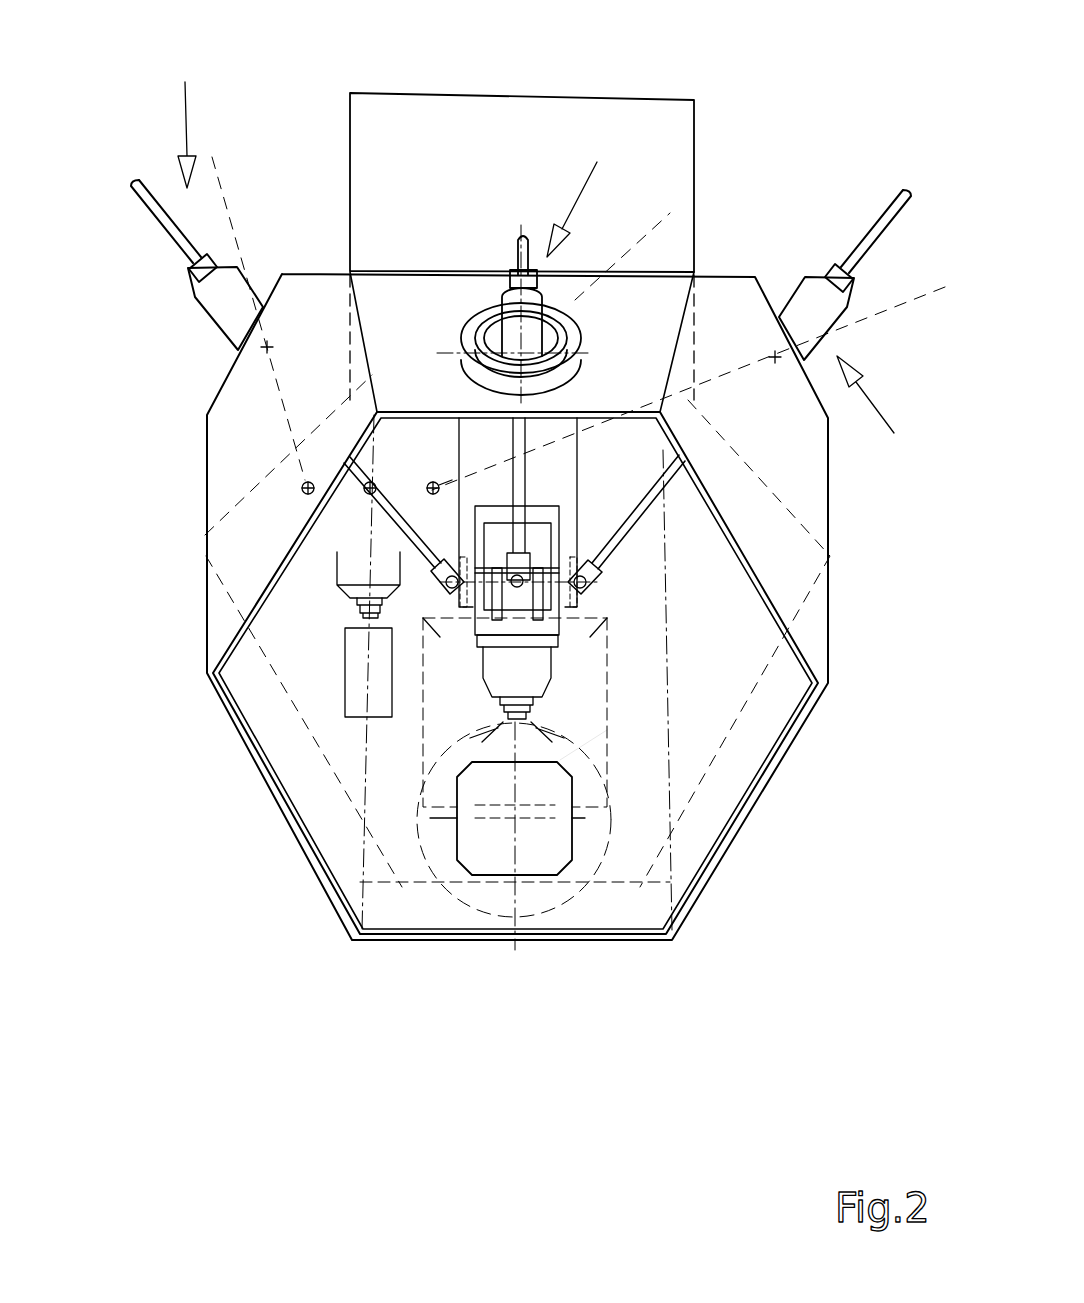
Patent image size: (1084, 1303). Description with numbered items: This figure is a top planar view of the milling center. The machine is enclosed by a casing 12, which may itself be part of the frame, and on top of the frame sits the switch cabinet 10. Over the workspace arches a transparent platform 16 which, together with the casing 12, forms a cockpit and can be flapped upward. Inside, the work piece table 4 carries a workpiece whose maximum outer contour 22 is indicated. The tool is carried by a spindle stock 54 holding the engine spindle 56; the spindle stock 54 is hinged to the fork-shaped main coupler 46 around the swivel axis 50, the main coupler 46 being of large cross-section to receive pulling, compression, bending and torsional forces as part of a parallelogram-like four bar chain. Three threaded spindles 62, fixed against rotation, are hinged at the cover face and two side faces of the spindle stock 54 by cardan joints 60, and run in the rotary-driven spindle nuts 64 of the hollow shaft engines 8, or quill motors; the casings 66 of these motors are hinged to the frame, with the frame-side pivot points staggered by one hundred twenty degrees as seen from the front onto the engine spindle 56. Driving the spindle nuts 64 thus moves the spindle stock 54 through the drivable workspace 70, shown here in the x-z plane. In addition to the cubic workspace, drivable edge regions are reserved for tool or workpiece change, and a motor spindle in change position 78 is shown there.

The work piece table 4 is at (497, 843).
The hollow shaft engines 8 is at (543, 252).
The switch cabinet 10 is at (525, 150).
The casing 12 is at (207, 622).
The transparent platform 16 is at (668, 733).
The maximum outer contour 22 is at (551, 915).
The main coupler 46 is at (553, 480).
The swivel axis 50 is at (445, 564).
The spindle stock 54 is at (490, 586).
The engine spindle 56 is at (533, 650).
The cardan joints 60 is at (565, 612).
The threaded spindles 62 is at (512, 247).
The spindle nuts 64 is at (507, 267).
The casings 66 is at (490, 297).
The workspace 70 is at (607, 730).
The motor spindle in change position 78 is at (361, 562).